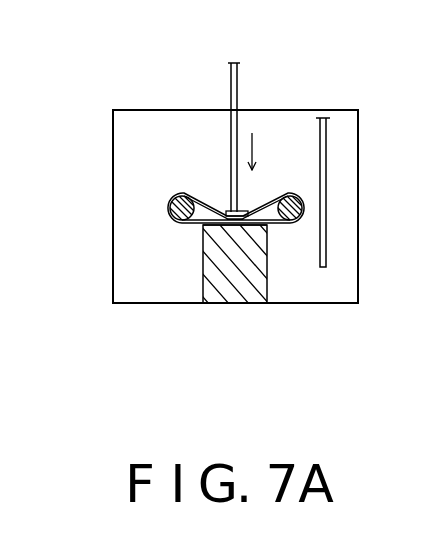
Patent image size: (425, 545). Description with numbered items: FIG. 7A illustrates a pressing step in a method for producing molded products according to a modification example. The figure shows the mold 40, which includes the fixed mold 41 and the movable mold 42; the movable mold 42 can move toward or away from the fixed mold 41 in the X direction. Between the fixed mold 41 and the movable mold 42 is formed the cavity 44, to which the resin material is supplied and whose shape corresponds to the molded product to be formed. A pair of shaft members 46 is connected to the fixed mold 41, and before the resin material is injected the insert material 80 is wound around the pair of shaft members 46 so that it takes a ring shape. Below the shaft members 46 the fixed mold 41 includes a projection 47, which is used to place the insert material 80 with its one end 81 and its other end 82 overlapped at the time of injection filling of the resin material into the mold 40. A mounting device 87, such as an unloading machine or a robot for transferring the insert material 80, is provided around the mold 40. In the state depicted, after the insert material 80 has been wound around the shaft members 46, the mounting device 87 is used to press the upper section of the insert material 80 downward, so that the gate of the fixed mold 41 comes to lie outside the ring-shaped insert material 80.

The mold 40 is at (163, 104).
The fixed mold 41 is at (218, 305).
The movable mold 42 is at (136, 305).
The cavity 44 is at (203, 194).
The shaft members 46 is at (168, 199).
The projection 47 is at (247, 291).
The insert material 80 is at (275, 194).
The one end of the insert material 81 is at (224, 209).
The other end of the insert material 82 is at (225, 229).
The mounting device 87 is at (314, 132).